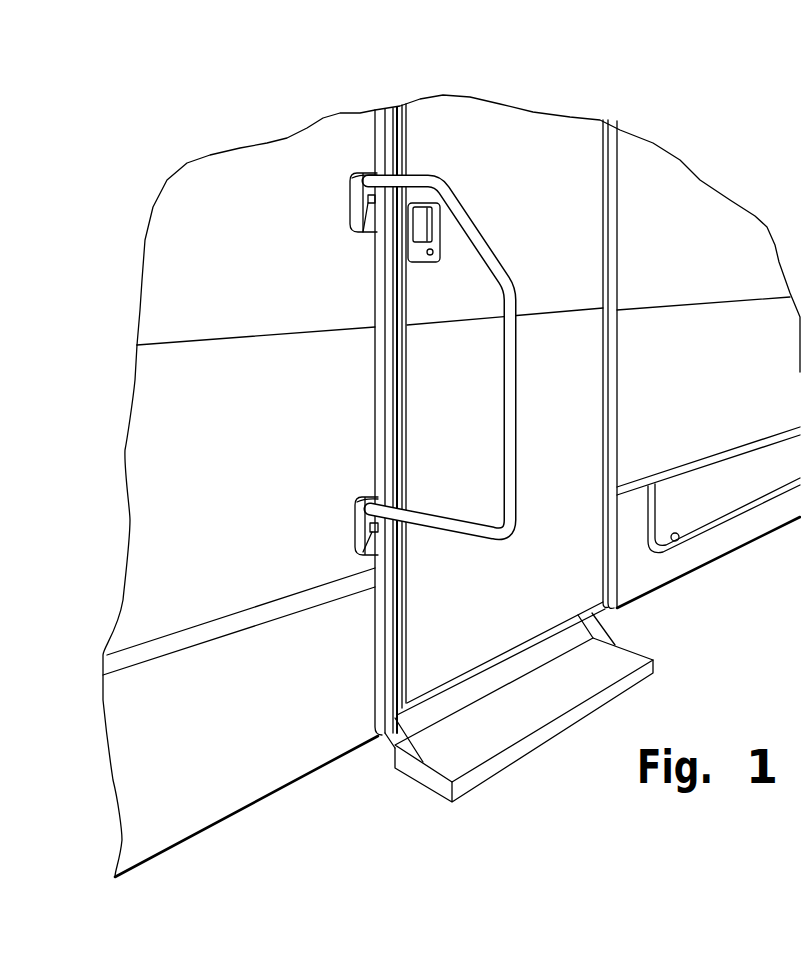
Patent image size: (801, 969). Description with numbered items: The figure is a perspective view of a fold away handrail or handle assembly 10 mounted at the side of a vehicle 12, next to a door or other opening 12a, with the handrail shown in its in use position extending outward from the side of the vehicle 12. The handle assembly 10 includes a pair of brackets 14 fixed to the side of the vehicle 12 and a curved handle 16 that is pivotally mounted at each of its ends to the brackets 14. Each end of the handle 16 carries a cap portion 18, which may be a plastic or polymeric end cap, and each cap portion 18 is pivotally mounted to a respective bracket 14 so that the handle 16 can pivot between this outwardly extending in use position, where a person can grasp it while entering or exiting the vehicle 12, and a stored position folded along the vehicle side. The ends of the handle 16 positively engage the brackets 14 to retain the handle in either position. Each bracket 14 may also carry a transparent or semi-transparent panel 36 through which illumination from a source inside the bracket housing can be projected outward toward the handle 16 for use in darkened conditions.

The handle assembly 10 is at (526, 222).
The vehicle 12 is at (231, 422).
The door or other opening 12a is at (548, 452).
The bracket 14 is at (338, 202).
The handle 16 is at (518, 392).
The cap portion 18 is at (350, 178).
The transparent or semi-transparent panel 36 is at (357, 232).